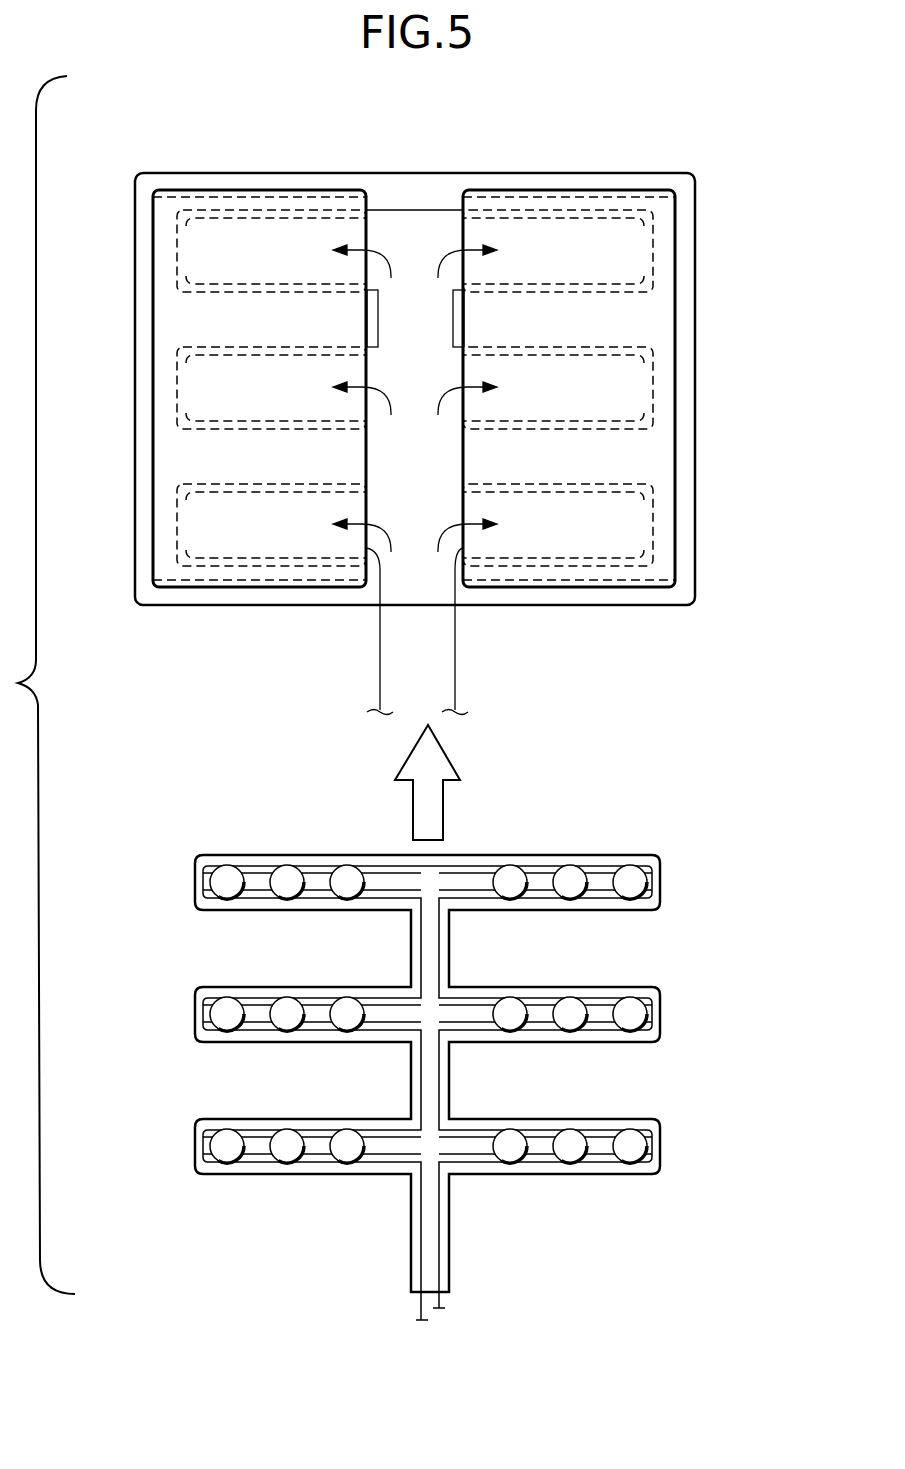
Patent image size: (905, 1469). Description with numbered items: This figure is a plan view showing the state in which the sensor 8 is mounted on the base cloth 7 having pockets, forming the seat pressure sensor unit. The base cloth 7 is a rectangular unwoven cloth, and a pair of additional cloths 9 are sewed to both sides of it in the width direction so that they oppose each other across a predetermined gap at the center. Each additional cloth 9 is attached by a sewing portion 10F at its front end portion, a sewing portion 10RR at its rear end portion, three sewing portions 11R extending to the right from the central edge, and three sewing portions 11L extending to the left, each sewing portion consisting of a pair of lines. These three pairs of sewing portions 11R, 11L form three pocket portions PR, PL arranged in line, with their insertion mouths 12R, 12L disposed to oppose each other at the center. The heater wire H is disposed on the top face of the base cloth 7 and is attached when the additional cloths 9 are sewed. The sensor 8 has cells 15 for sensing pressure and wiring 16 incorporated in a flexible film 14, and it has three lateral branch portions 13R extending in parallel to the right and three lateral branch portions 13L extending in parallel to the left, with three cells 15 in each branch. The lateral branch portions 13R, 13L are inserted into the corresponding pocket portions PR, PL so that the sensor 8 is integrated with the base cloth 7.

The base cloth 7 is at (613, 130).
The sensor 8 is at (616, 818).
The additional cloths 9 is at (153, 483).
The sewing portion 10F is at (201, 198).
The sewing portion 10RR is at (282, 580).
The sewing portions 11L is at (177, 238).
The sewing portions 11R is at (653, 238).
The insertion mouths 12L is at (372, 226).
The insertion mouths 12R is at (461, 226).
The lateral branch portions 13L is at (195, 886).
The lateral branch portions 13R is at (660, 880).
The film 14 is at (411, 1272).
The cells 15 is at (227, 899).
The wiring 16 is at (440, 1300).
The heater wire H is at (420, 210).
The pocket portions PL is at (254, 262).
The pocket portions PR is at (546, 262).